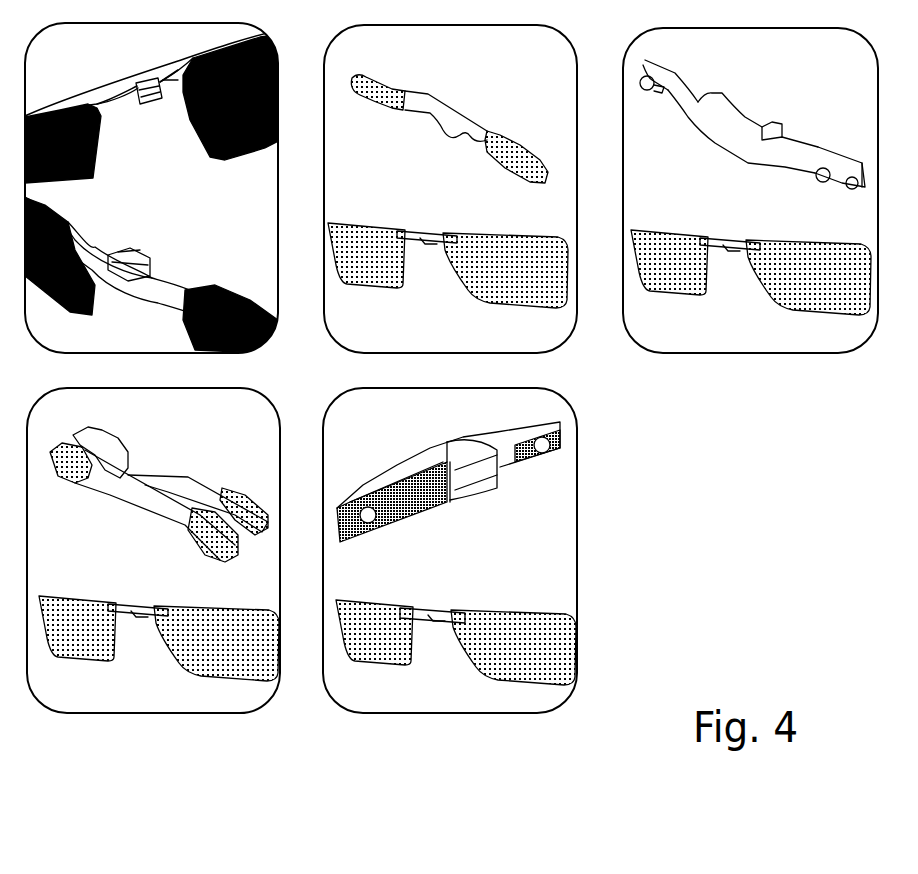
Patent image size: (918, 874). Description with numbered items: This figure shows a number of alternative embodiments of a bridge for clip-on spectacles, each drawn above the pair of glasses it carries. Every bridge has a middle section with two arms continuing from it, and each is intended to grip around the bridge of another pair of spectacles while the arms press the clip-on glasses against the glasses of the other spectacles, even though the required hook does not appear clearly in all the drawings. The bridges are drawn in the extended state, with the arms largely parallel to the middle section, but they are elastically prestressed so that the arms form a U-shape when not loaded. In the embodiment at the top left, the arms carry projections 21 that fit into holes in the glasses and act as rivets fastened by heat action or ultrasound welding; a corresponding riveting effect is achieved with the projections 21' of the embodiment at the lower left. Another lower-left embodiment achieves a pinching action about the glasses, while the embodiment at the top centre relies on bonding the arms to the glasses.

The projection 21 is at (660, 130).
The projection 21' is at (414, 542).